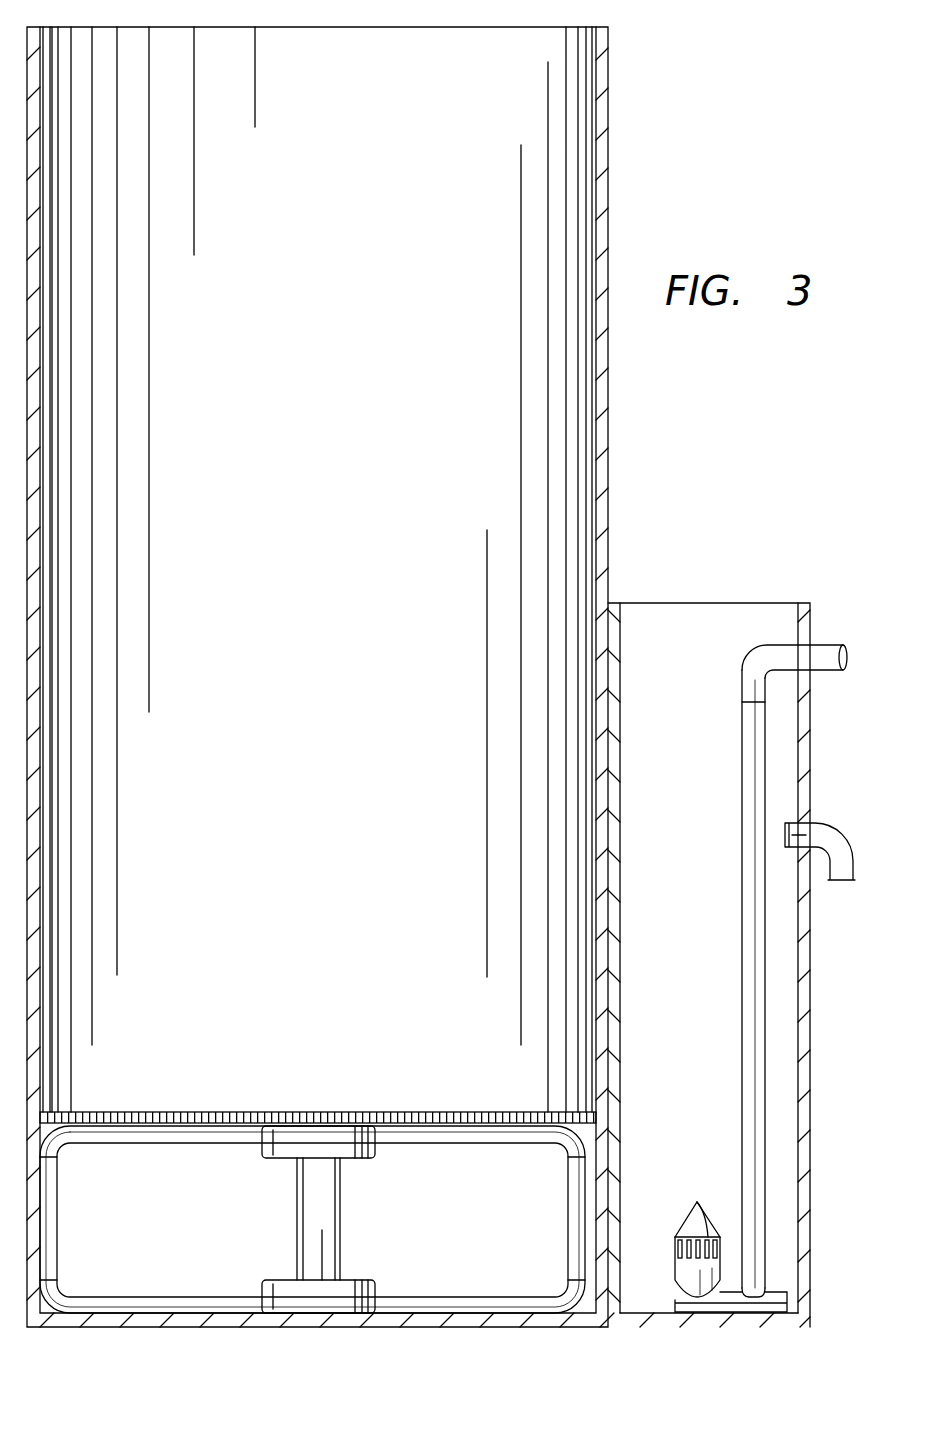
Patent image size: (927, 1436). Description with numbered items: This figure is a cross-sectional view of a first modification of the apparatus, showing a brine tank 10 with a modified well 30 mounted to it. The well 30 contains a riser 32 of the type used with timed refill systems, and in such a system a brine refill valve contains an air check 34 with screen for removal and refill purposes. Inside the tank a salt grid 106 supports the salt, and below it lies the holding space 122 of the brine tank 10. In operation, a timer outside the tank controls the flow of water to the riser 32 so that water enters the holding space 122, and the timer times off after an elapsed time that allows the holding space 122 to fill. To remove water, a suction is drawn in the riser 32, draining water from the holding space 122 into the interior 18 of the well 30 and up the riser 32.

The brine tank 10 is at (641, 519).
The interior of the well 18 is at (690, 681).
The modified well 30 is at (805, 580).
The riser 32 is at (742, 985).
The air check 34 is at (685, 1222).
The salt grid 106 is at (488, 1112).
The holding space 122 is at (173, 1228).